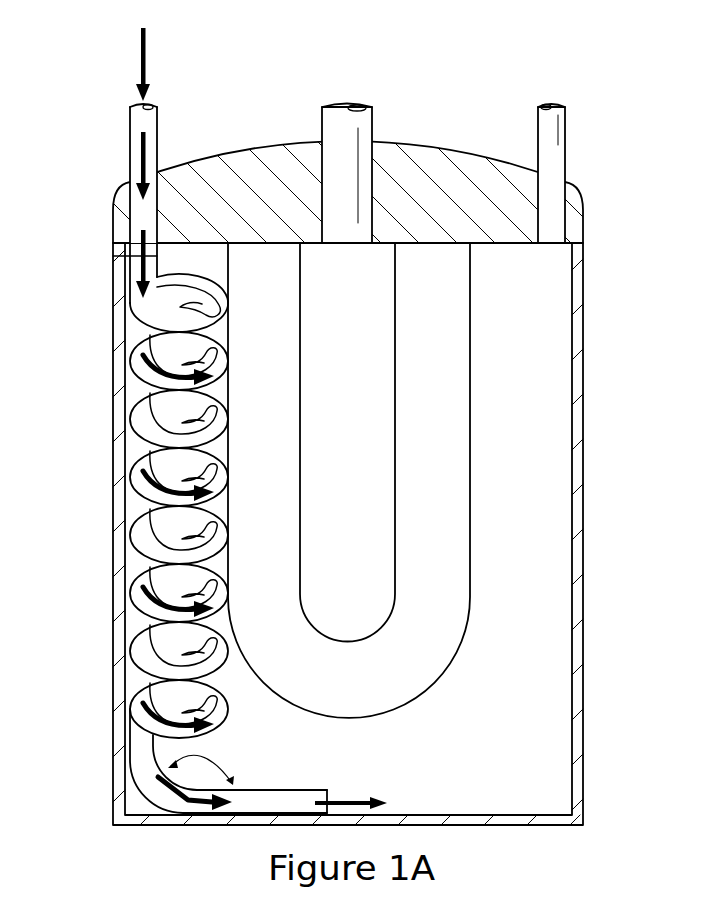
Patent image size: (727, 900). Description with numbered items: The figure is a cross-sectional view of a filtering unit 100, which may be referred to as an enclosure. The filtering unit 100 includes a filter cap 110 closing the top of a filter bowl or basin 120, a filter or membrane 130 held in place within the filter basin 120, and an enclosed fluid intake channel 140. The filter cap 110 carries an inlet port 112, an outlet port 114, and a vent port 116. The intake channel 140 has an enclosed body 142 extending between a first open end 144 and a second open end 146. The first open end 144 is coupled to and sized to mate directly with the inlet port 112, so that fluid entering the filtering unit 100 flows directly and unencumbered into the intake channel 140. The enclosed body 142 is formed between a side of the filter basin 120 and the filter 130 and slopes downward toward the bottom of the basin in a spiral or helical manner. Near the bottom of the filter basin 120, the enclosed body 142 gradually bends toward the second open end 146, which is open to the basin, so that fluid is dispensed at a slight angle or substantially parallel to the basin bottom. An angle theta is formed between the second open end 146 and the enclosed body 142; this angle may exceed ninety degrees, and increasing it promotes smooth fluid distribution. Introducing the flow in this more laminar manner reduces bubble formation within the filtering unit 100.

The filtering unit 100 is at (371, 420).
The filter cap 110 is at (433, 148).
The inlet port 112 is at (130, 150).
The outlet port 114 is at (320, 125).
The vent port 116 is at (565, 153).
The filter basin 120 is at (603, 243).
The filter 130 is at (536, 436).
The fluid intake channel 140 is at (185, 500).
The enclosed body 142 is at (127, 343).
The first open end 144 is at (127, 263).
The second open end 146 is at (349, 762).